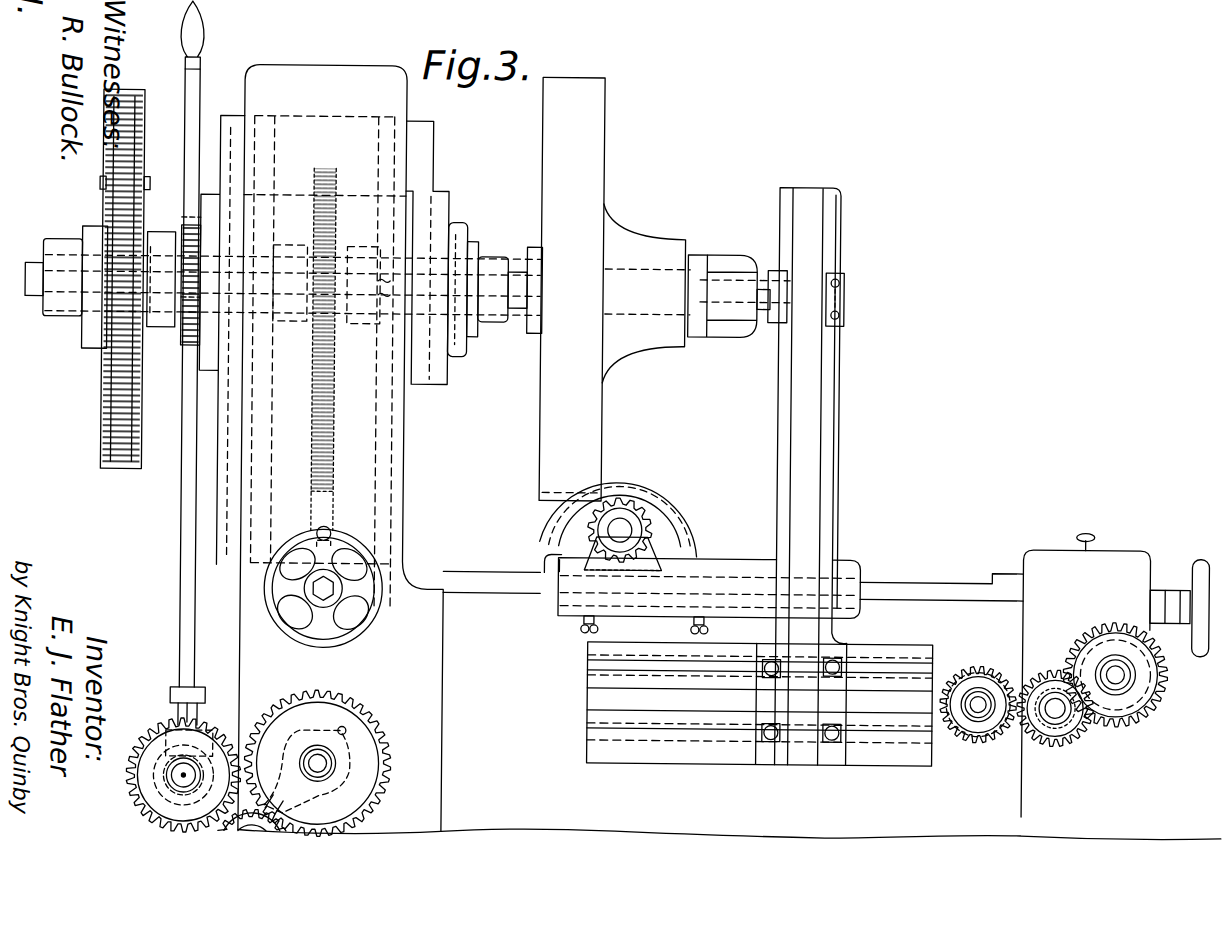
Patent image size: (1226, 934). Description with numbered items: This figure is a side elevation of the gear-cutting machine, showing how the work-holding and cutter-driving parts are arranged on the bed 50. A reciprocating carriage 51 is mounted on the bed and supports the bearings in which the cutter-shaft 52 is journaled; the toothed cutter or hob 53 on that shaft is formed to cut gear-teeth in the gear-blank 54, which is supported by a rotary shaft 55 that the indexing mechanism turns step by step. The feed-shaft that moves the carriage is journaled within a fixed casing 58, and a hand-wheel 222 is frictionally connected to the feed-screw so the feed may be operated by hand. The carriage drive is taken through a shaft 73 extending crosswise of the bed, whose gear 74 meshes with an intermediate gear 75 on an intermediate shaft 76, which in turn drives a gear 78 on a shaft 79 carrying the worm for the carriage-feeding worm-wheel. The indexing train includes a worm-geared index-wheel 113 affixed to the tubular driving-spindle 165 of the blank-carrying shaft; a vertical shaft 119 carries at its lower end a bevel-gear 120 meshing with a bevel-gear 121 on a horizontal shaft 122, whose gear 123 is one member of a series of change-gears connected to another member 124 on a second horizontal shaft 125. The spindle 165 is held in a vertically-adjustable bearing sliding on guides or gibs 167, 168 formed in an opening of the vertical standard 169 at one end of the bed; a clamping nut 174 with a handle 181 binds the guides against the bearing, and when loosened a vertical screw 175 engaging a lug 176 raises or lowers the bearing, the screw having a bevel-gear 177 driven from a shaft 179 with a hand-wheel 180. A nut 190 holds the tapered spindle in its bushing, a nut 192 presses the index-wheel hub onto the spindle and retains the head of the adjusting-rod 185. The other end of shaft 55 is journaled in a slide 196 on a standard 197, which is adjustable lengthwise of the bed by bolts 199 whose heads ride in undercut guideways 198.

The bed 50 is at (495, 590).
The reciprocating carriage 51 is at (737, 559).
The cutter-shaft 52 is at (632, 529).
The toothed cutter or hob 53 is at (627, 506).
The gear-blank 54 is at (593, 418).
The rotary shaft 55 is at (518, 300).
The fixed casing 58 is at (1125, 561).
The shaft 73 is at (983, 695).
The gear 74 is at (990, 737).
The intermediate gear 75 is at (1089, 723).
The intermediate shaft 76 is at (1061, 711).
The gear 78 is at (1169, 669).
The shaft 79 is at (1134, 684).
The worm-geared index-wheel 113 is at (102, 398).
The vertical shaft 119 is at (183, 578).
The bevel-gear 120 is at (152, 741).
The bevel-gear 121 is at (152, 815).
The horizontal shaft 122 is at (182, 776).
The gear 123 is at (135, 773).
The change-gear member 124 is at (343, 703).
The horizontal shaft 125 is at (340, 771).
The tubular driving-spindle 165 is at (487, 262).
The vertical guides or gibs 167 is at (418, 162).
The vertical guides or gibs 168 is at (223, 137).
The vertical standard 169 is at (322, 76).
The nut 174 is at (192, 350).
The vertical screw 175 is at (313, 428).
The lug 176 is at (343, 250).
The bevel-gear 177 is at (340, 546).
The shaft 179 is at (334, 597).
The hand-wheel 180 is at (318, 642).
The handle 181 is at (198, 92).
The adjusting-rod 185 is at (34, 288).
The nut 190 is at (167, 330).
The nut 192 is at (56, 312).
The slide 196 is at (842, 293).
The standard 197 is at (830, 236).
The horizontal undercut guideways 198 is at (895, 667).
The bolts 199 is at (770, 658).
The hand-wheel 222 is at (1193, 566).